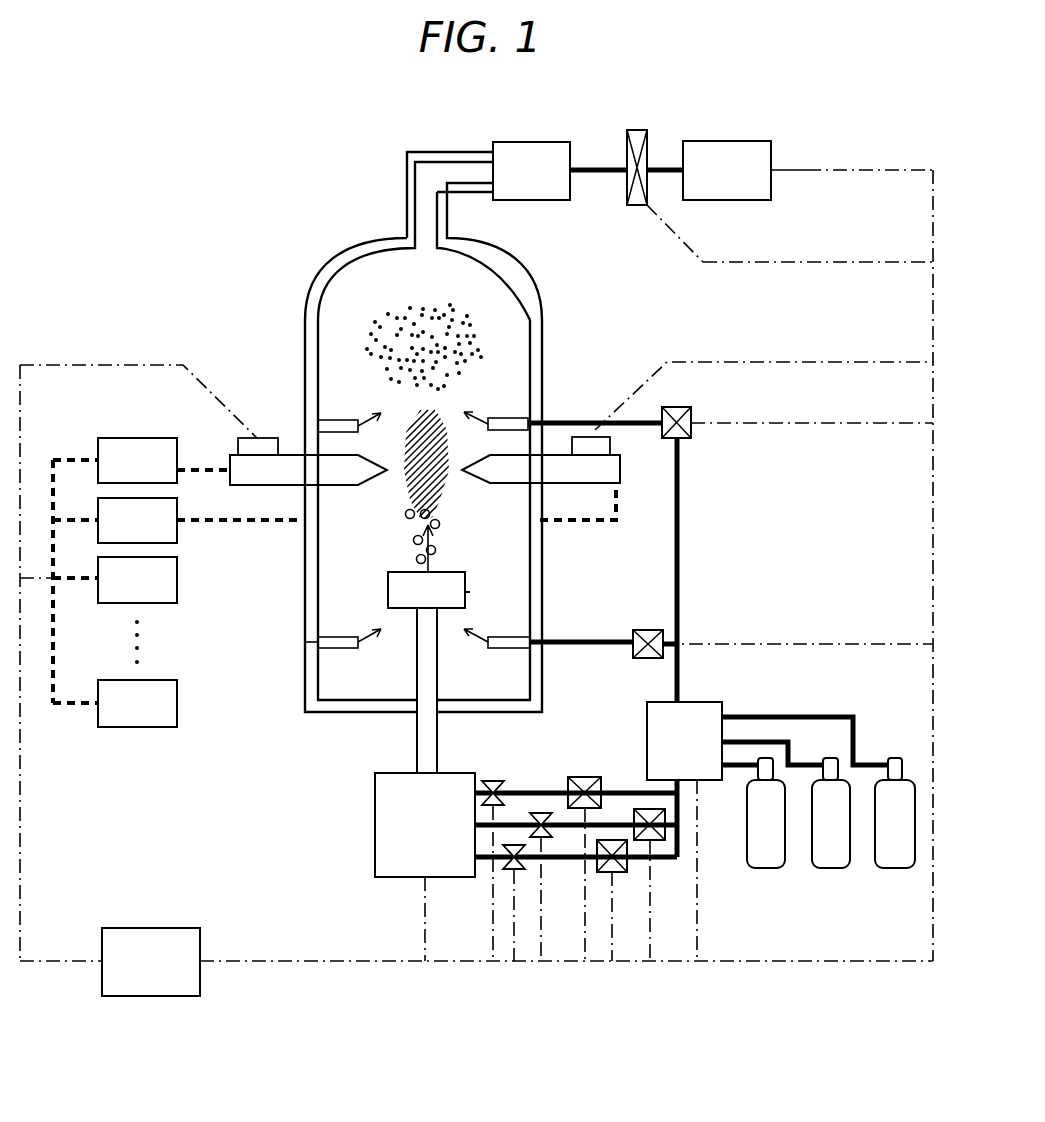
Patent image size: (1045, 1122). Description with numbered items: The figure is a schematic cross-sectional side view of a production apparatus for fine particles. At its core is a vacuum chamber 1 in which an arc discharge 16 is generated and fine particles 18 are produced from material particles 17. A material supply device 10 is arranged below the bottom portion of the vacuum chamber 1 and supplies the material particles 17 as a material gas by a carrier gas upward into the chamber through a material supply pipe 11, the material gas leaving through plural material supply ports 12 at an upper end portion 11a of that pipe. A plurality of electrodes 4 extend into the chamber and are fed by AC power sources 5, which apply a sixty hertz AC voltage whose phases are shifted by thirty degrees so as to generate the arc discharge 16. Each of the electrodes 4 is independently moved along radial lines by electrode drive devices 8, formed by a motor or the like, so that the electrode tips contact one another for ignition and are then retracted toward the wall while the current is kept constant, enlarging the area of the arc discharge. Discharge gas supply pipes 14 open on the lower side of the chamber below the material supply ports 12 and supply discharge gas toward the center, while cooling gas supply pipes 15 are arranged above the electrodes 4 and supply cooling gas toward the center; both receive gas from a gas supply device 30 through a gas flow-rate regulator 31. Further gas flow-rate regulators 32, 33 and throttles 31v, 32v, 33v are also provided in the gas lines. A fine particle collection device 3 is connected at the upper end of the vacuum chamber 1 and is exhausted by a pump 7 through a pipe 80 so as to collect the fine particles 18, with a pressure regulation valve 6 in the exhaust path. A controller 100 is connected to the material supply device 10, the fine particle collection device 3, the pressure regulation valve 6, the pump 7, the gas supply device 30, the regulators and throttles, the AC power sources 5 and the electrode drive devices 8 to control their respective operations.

The vacuum chamber 1 is at (360, 255).
The fine particle collection device 3 is at (533, 148).
The pipe 80 is at (603, 167).
The pressure regulation valve 6 is at (637, 135).
The pump 7 is at (725, 152).
The fine particles 18 is at (372, 350).
The cooling gas supply pipes 15 is at (337, 423).
The electrode drive devices 8 is at (250, 447).
The electrodes 4 is at (230, 468).
The gas flow-rate regulator 31 is at (690, 427).
The throttle 31v is at (493, 780).
The gas flow-rate regulator 32 is at (652, 840).
The throttle 32v is at (543, 838).
The gas flow-rate regulator 33 is at (614, 872).
The throttle 33v is at (513, 870).
The arc discharge 16 is at (437, 488).
The material particles 17 is at (419, 558).
The material supply ports 12 is at (388, 592).
The upper end portion 11a is at (466, 592).
The material supply pipe 11 is at (420, 733).
The discharge gas supply pipes 14 is at (338, 644).
The material supply device 10 is at (385, 822).
The gas supply device 30 is at (688, 712).
The AC power sources 5 is at (129, 424).
The controller 100 is at (150, 996).